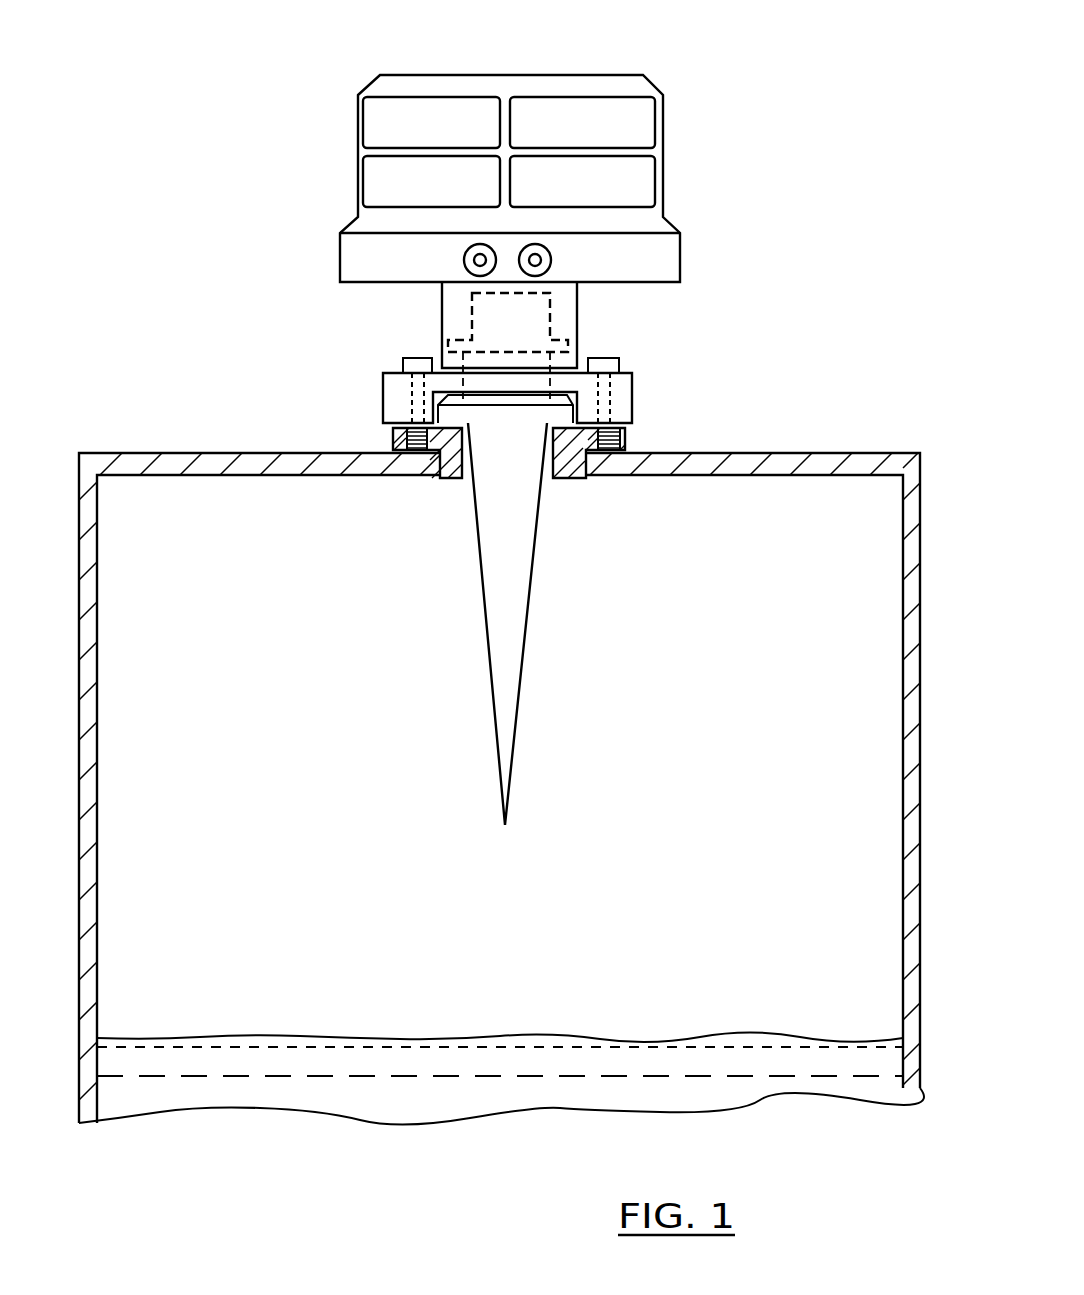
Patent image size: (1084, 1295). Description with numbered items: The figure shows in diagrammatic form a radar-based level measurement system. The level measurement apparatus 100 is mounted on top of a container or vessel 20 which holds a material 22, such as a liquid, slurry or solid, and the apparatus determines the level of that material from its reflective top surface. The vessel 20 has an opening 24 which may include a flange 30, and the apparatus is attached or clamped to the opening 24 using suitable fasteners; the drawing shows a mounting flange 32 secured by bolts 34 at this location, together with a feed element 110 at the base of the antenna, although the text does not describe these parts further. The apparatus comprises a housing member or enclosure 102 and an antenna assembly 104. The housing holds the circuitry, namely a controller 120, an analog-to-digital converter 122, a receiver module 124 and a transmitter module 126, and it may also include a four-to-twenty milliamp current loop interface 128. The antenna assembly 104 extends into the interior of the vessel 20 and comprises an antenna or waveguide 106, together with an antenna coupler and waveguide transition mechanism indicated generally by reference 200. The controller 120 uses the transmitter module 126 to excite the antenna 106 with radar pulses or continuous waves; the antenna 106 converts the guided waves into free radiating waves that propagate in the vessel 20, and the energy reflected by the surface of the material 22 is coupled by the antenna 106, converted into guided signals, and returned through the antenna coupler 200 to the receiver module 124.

The level measurement apparatus 100 is at (745, 58).
The housing member or enclosure 102 is at (680, 140).
The controller 120 is at (412, 97).
The analog-to-digital converter 122 is at (580, 97).
The receiver module 124 is at (363, 165).
The transmitter module 126 is at (657, 180).
The current loop interface 128 is at (445, 260).
The antenna coupler 200 is at (532, 325).
The mounting flange 32 is at (635, 398).
The bolts 34 is at (410, 360).
The flange 30 is at (637, 437).
The antenna feed / waveguide seal 110 is at (437, 478).
The antenna assembly 104 is at (483, 610).
The antenna or waveguide 106 is at (525, 600).
The container or vessel 20 is at (800, 448).
The opening 24 is at (463, 483).
The material 22 is at (304, 1121).